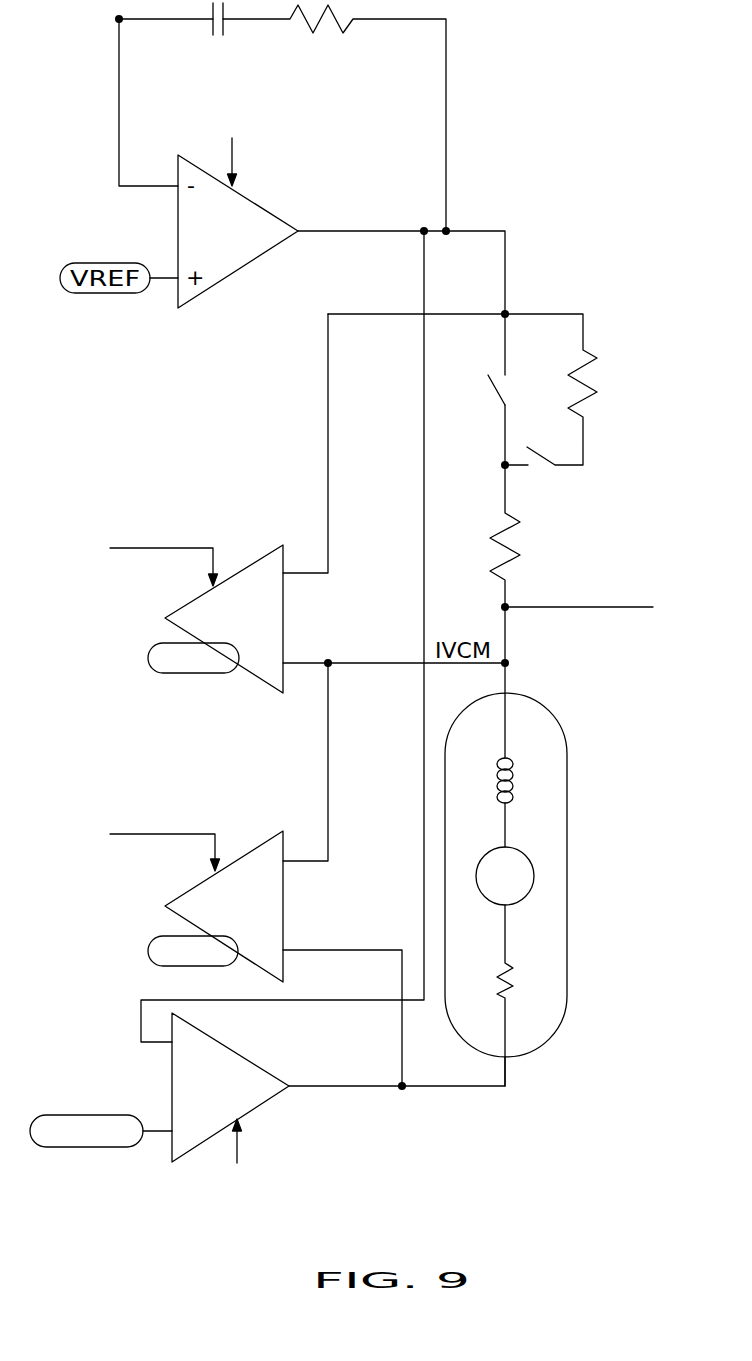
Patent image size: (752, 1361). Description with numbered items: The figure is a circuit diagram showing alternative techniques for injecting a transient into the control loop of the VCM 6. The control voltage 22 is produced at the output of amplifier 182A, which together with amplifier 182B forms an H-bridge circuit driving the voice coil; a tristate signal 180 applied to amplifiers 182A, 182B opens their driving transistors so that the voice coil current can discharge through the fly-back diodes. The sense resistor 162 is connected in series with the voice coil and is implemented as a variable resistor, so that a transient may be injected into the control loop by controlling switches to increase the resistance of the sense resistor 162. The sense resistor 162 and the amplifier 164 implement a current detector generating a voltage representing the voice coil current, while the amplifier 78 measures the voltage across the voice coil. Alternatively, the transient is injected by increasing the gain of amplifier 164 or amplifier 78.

The VCM 6 is at (533, 700).
The control voltage 22 is at (360, 235).
The amplifier 78 is at (152, 917).
The sense resistor 162 is at (607, 320).
The amplifier 164 is at (160, 630).
The tristate signal 180 is at (235, 150).
The amplifier 182A is at (266, 208).
The amplifier 182B is at (231, 1046).